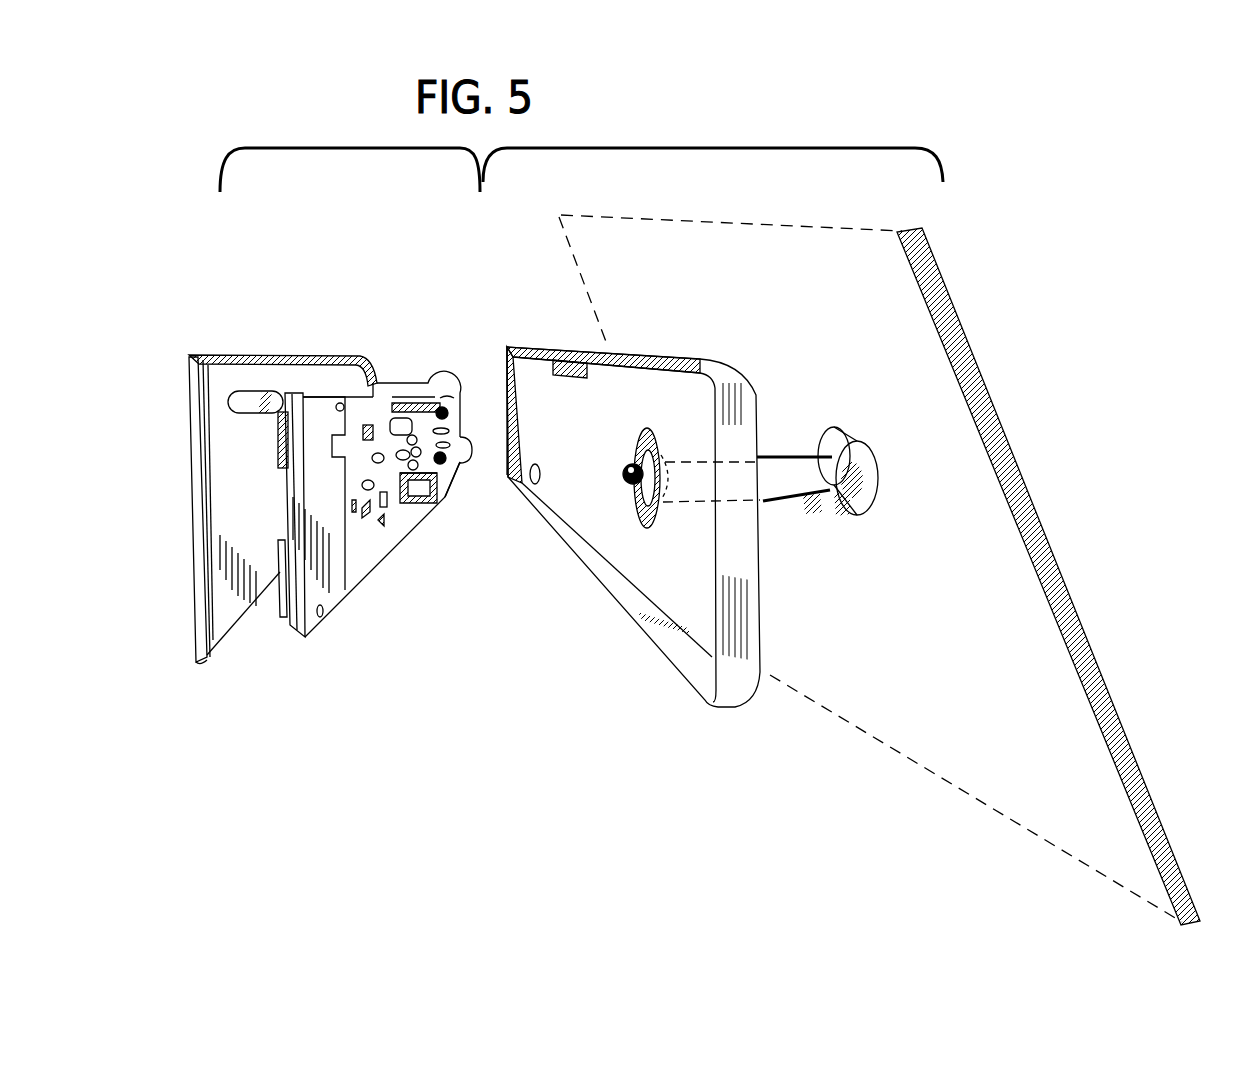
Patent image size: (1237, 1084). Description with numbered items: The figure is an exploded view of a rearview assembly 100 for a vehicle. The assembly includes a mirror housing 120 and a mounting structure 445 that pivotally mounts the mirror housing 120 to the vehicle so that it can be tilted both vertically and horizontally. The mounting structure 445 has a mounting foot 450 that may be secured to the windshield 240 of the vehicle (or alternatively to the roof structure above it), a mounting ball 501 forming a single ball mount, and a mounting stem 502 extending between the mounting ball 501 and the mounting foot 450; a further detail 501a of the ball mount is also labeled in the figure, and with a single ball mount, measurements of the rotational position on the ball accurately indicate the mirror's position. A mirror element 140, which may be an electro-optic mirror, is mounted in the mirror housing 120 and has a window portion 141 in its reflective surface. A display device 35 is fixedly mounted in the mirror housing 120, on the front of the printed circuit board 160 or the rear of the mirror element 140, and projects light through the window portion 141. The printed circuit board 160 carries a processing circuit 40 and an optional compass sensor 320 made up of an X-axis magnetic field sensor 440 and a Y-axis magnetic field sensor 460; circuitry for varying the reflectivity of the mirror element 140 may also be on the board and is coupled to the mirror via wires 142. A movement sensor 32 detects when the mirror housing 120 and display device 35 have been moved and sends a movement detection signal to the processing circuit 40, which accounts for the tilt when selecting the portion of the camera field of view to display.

The rearview assembly 100 is at (556, 600).
The mirror housing 120 is at (745, 700).
The mirror element 140 is at (217, 652).
The window portion 141 is at (241, 400).
The wires 142 is at (450, 468).
The printed circuit board 160 is at (318, 623).
The movement sensor 32 is at (418, 428).
The display device 35 is at (278, 441).
The processing circuit 40 is at (380, 523).
The windshield 240 is at (942, 652).
The compass sensor 320 is at (449, 501).
The X-axis magnetic field sensor 440 is at (430, 503).
The mounting structure 445 is at (783, 443).
The mounting foot 450 is at (868, 468).
The Y-axis magnetic field sensor 460 is at (426, 483).
The mounting ball 501 is at (650, 434).
The light source 501a is at (622, 463).
The mounting stem 502 is at (781, 490).